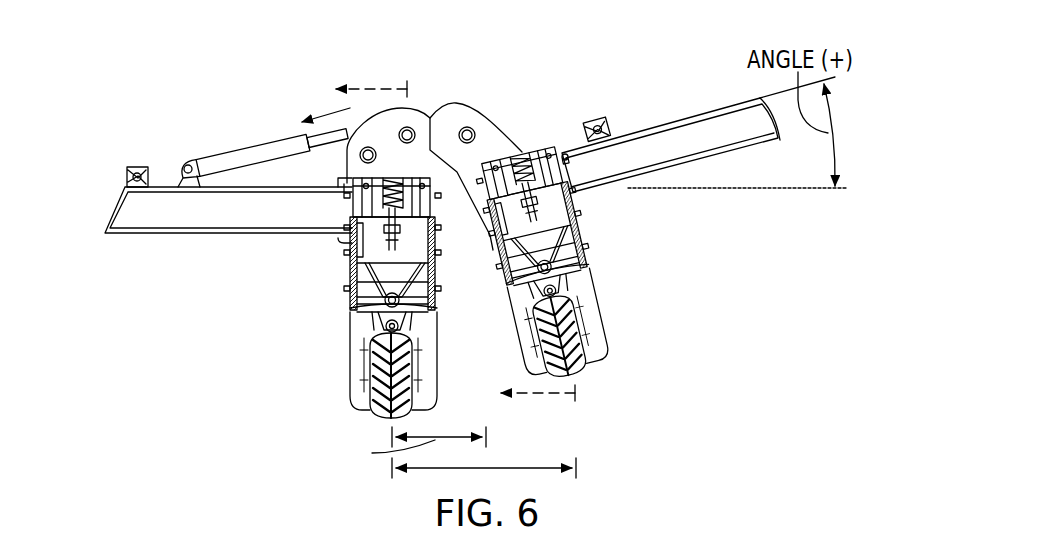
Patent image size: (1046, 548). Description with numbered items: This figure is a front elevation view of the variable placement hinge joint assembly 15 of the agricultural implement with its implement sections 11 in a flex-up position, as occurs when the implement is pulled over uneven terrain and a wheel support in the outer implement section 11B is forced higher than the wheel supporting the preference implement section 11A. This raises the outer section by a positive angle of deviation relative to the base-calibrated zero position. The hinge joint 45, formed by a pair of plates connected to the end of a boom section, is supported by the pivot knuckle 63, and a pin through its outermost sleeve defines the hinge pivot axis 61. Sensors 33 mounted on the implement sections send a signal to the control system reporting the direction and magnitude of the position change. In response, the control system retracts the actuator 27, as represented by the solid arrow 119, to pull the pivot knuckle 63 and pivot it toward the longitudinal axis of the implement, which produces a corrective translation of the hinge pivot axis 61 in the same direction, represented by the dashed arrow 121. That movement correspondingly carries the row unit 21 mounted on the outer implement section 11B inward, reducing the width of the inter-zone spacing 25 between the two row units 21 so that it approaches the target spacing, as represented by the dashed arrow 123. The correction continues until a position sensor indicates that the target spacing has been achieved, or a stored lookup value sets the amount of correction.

The implement section 11 is at (442, 162).
The preference implement section 11A is at (136, 222).
The outer implement section 11B is at (733, 116).
The variable placement hinge joint assembly 15 is at (442, 218).
The row unit 21 is at (345, 262).
The inter-zone spacing 25 is at (548, 470).
The actuator 27 is at (250, 140).
The sensor 33 is at (130, 166).
The hinge joint 45 is at (440, 157).
The hinge pivot axis 61 is at (409, 130).
The pivot knuckle 63 is at (345, 161).
The solid arrow 119 is at (320, 114).
The dashed arrow 121 is at (375, 88).
The dashed arrow 123 is at (562, 395).